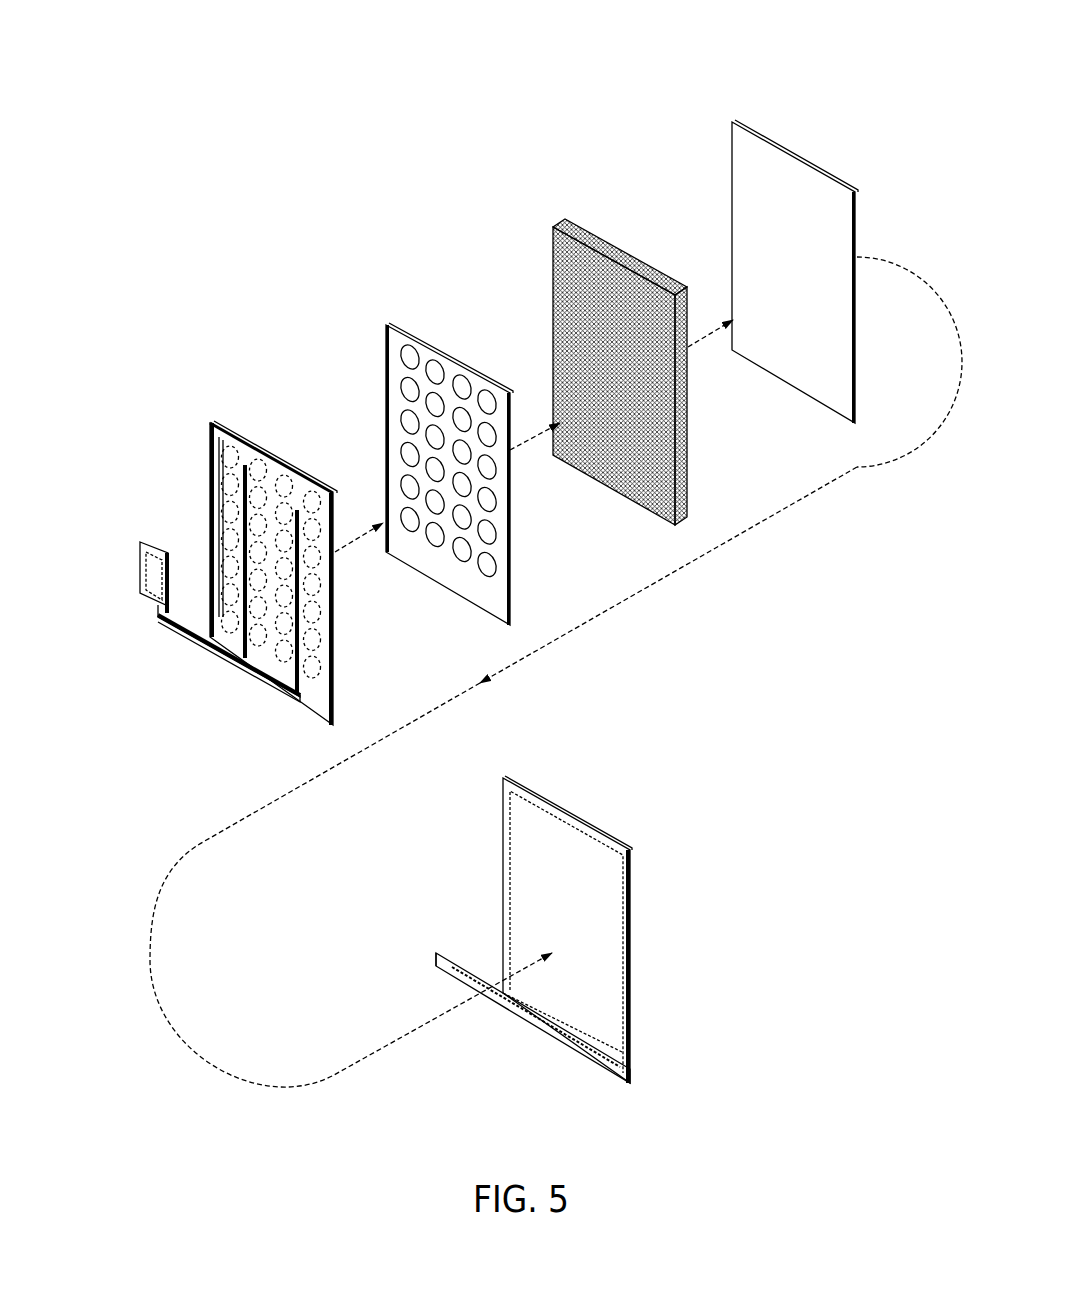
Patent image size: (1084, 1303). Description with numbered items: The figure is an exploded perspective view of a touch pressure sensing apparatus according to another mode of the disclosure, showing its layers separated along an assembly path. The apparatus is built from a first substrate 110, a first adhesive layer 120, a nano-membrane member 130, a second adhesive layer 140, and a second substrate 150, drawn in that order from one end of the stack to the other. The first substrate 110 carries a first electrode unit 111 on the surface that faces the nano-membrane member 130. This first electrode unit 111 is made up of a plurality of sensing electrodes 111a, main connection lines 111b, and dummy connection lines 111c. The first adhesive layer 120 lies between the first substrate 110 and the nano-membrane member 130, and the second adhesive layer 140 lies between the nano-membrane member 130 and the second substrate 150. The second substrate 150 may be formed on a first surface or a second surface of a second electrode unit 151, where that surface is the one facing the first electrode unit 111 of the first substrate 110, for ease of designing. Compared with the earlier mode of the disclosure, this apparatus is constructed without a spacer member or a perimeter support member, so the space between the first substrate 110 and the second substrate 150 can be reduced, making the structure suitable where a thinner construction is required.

The first substrate 110 is at (214, 422).
The first electrode unit 111 is at (110, 422).
The sensing electrodes 111a is at (213, 453).
The main connection lines 111b is at (213, 517).
The dummy connection lines 111c is at (213, 483).
The first adhesive layer 120 is at (387, 323).
The nano-membrane member 130 is at (572, 222).
The second adhesive layer 140 is at (736, 120).
The second substrate 150 is at (633, 1068).
The second electrode unit 151 is at (633, 901).